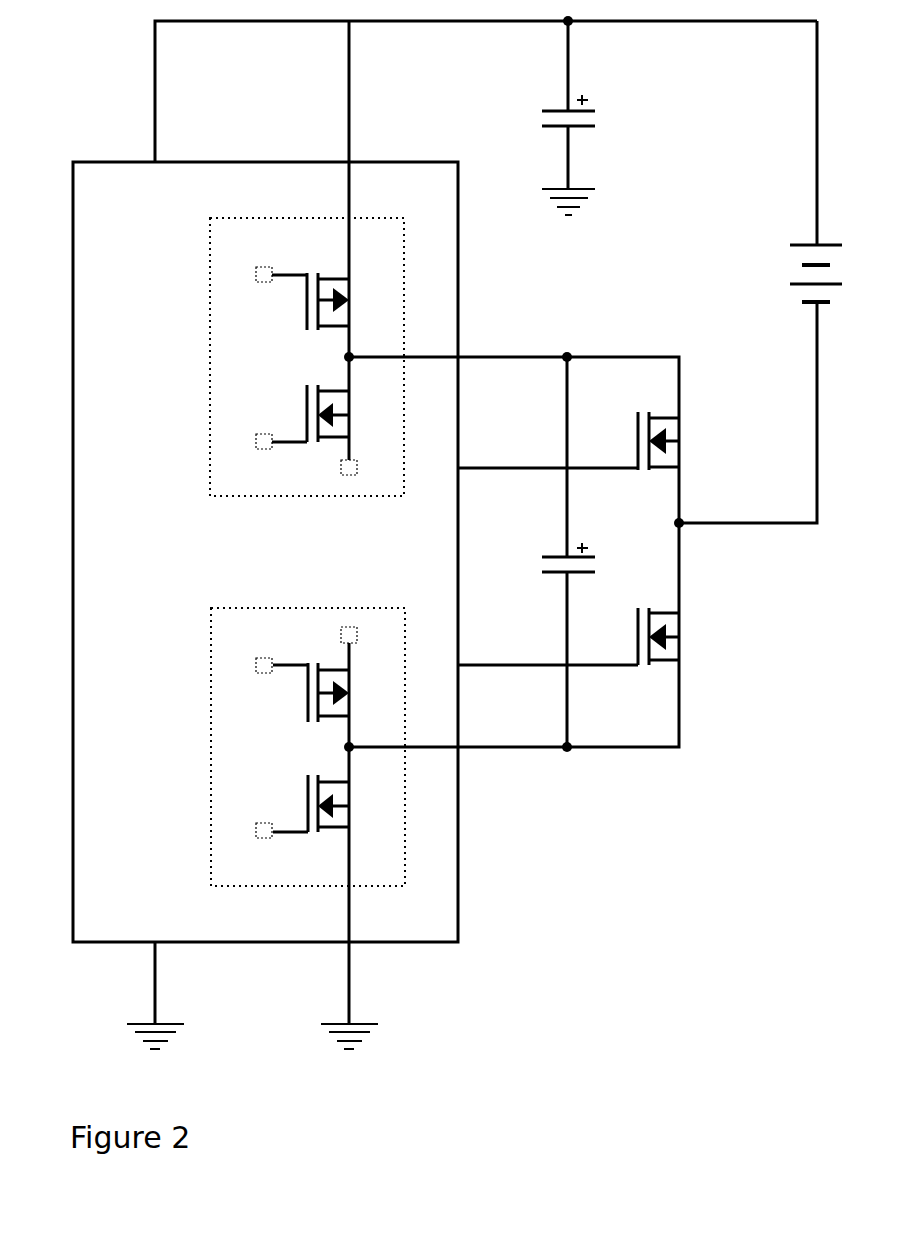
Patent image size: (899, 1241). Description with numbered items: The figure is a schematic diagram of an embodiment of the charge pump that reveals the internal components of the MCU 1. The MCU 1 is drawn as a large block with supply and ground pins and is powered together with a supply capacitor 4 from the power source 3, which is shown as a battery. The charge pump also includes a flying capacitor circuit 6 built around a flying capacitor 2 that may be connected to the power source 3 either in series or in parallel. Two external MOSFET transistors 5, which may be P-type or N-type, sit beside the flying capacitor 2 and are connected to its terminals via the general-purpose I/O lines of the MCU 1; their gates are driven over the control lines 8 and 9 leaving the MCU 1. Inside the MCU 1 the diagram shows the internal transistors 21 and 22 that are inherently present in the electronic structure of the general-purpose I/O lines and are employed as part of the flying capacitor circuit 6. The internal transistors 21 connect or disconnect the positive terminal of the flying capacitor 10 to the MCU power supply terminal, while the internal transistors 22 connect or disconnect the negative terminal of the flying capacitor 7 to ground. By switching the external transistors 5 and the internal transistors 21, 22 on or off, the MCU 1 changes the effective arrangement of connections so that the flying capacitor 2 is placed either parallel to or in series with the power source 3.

The MCU 1 is at (98, 160).
The flying capacitor 2 is at (550, 553).
The power source 3 is at (793, 240).
The supply capacitor 4 is at (583, 125).
The MOSFET transistors 5 is at (643, 471).
The flying capacitor circuit 6 is at (687, 758).
The negative terminal of the flying capacitor 7 is at (613, 750).
The first gate control line 8 is at (516, 466).
The second gate control line 9 is at (505, 668).
The positive terminal of the flying capacitor 10 is at (525, 356).
The internal transistors 21 is at (302, 410).
The internal transistors 22 is at (302, 803).